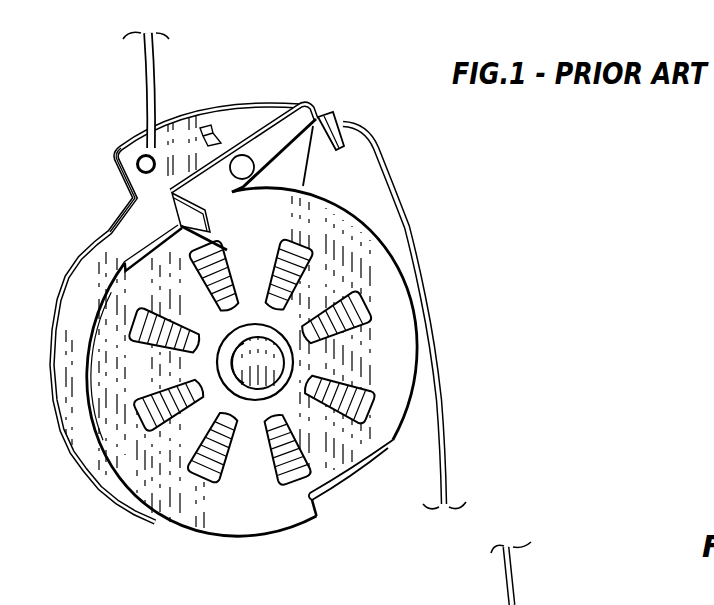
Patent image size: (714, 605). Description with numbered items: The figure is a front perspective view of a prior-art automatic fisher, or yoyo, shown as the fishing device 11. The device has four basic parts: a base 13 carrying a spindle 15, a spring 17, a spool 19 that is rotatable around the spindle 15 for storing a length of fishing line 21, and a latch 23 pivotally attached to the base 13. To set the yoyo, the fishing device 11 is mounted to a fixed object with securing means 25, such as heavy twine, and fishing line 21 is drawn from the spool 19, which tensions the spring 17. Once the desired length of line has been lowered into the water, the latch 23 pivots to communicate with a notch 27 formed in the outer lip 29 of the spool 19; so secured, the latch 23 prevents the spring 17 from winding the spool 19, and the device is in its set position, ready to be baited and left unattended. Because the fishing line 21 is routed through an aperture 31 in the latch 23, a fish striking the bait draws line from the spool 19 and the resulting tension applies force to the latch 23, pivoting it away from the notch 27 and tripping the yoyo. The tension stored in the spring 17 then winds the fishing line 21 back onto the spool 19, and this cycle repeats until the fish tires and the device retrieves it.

The fishing device 11 is at (100, 541).
The base 13 is at (130, 201).
The spindle 15 is at (262, 356).
The spring 17 is at (294, 466).
The spool 19 is at (385, 418).
The fishing line 21 is at (409, 228).
The latch 23 is at (262, 150).
The securing means 25 is at (143, 84).
The notch 27 is at (177, 225).
The outer lip 29 is at (312, 522).
The aperture 31 is at (321, 112).